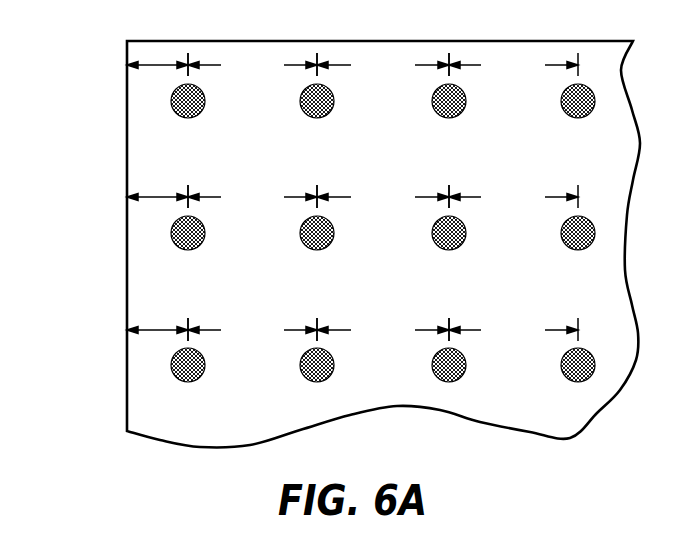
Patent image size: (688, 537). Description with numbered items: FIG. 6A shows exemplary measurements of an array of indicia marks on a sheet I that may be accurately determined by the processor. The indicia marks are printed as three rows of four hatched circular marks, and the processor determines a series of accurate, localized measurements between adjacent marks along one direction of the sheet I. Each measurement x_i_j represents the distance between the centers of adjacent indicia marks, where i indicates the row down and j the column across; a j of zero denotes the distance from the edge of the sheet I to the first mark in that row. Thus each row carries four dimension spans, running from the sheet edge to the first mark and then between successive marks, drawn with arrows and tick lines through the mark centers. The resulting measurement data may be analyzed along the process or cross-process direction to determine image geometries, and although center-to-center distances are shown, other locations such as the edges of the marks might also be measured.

The substrate / carrier with conductive fields I is at (155, 40).